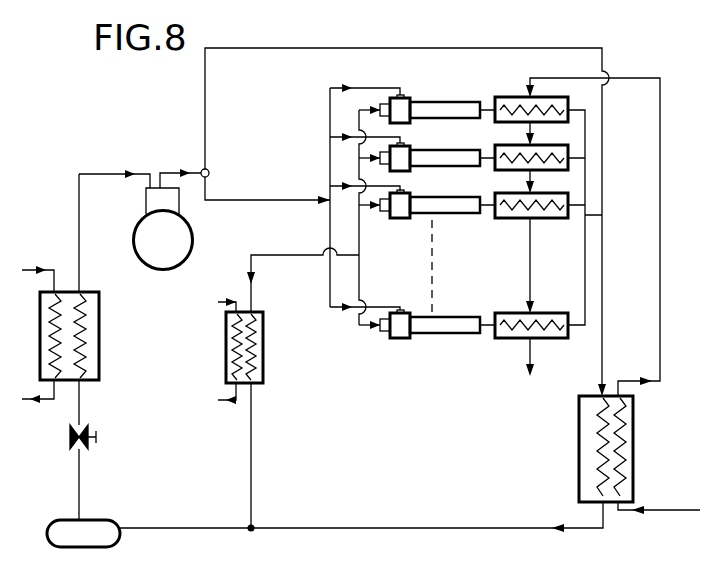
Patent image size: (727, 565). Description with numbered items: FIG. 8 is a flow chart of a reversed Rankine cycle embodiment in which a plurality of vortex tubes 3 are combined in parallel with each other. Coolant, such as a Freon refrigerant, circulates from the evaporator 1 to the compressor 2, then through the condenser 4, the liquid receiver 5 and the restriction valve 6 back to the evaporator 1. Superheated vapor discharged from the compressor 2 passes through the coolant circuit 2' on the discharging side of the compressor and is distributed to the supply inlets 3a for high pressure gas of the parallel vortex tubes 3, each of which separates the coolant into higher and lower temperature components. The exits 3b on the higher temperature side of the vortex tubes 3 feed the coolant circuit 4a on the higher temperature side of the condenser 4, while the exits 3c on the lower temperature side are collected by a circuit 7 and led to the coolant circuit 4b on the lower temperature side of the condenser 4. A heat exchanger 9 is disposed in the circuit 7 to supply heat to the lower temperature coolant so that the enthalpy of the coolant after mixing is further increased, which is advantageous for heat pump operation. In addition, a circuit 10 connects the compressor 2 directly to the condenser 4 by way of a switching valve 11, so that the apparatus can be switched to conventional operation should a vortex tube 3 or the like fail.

The evaporator 1 is at (99, 331).
The compressor 2 is at (163, 246).
The coolant circuit on the discharging side of the compressor 2' is at (302, 197).
The vortex tube 3 is at (437, 101).
The supply inlet for high pressure gas 3a is at (404, 95).
The exit on the higher temperature side 3b is at (481, 98).
The exit on the lower temperature side 3c is at (378, 111).
The condenser 4 is at (568, 104).
The coolant circuit on the higher temperature side of the condenser 4a is at (490, 92).
The coolant circuit on the lower temperature side of the condenser 4b is at (430, 528).
The liquid receiver 5 is at (107, 520).
The restriction valve 6 is at (90, 432).
The circuit 7 is at (359, 235).
The heat exchanger 9 is at (263, 366).
The circuit 10 is at (400, 48).
The switching valve 11 is at (208, 169).